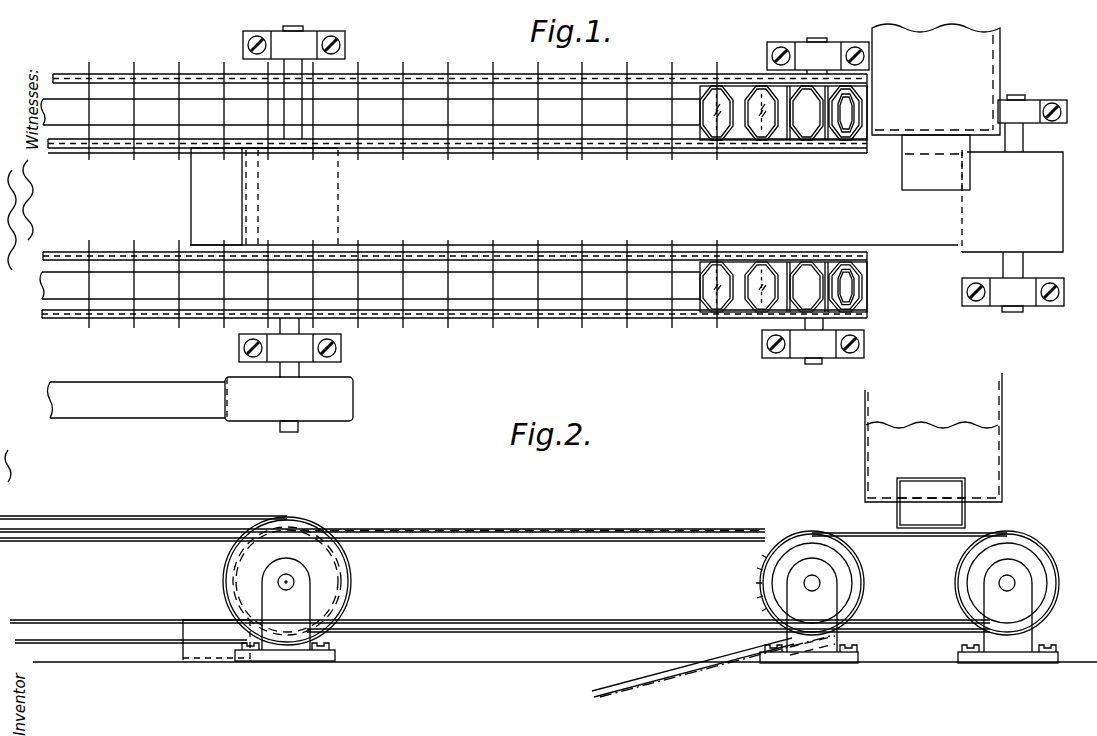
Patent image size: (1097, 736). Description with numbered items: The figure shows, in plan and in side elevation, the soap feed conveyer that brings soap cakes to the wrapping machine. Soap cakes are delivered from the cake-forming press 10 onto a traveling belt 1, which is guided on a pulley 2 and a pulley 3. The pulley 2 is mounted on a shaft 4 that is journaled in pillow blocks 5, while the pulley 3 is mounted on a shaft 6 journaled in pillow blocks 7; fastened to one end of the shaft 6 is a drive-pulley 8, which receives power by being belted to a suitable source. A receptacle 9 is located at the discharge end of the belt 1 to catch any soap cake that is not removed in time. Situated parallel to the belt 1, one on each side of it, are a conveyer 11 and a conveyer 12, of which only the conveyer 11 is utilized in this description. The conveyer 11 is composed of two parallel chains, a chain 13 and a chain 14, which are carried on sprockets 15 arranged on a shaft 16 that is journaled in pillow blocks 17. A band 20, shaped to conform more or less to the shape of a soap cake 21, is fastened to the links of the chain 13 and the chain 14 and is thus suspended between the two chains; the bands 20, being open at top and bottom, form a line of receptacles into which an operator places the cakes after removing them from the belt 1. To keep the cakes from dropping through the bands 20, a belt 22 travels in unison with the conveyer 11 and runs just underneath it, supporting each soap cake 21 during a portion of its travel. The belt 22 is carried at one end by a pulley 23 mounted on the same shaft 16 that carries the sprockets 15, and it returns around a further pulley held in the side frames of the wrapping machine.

In FIG. 1, the traveling belt 1 is at (939, 237).
In FIG. 2, the traveling belt 1 is at (876, 533).
In FIG. 1, the pulley 2 is at (1058, 252).
In FIG. 2, the pulley 2 is at (1060, 579).
In FIG. 1, the pulley 3 is at (340, 349).
In FIG. 2, the pulley 3 is at (333, 583).
In FIG. 1, the shaft 4 is at (1013, 265).
In FIG. 2, the shaft 4 is at (1006, 597).
In FIG. 1, the pillow blocks 5 is at (1055, 102).
In FIG. 1, the shaft 6 is at (280, 427).
In FIG. 2, the shaft 6 is at (289, 584).
In FIG. 1, the pillow blocks 7 is at (345, 38).
In FIG. 2, the pillow blocks 7 is at (277, 596).
In FIG. 1, the drive-pulley 8 is at (348, 422).
In FIG. 2, the drive-pulley 8 is at (227, 578).
In FIG. 1, the receptacle 9 is at (264, 196).
In FIG. 2, the receptacle 9 is at (183, 660).
In FIG. 1, the cake-forming press 10 is at (936, 107).
In FIG. 2, the cake-forming press 10 is at (985, 458).
In FIG. 1, the conveyer 11 is at (427, 90).
In FIG. 2, the conveyer 11 is at (68, 530).
In FIG. 1, the conveyer 12 is at (432, 268).
In FIG. 1, the chain 13 is at (472, 83).
In FIG. 1, the chain 14 is at (428, 143).
In FIG. 2, the sprockets 15 is at (762, 592).
In FIG. 1, the shaft 16 is at (816, 38).
In FIG. 2, the shaft 16 is at (809, 603).
In FIG. 1, the pillow blocks 17 is at (800, 47).
In FIG. 2, the pillow blocks 17 is at (798, 648).
In FIG. 1, the band 20 is at (762, 86).
In FIG. 1, the soap cake 21 is at (760, 128).
In FIG. 1, the belt 22 is at (575, 112).
In FIG. 2, the belt 22 is at (573, 545).
In FIG. 2, the pulley 23 is at (762, 566).